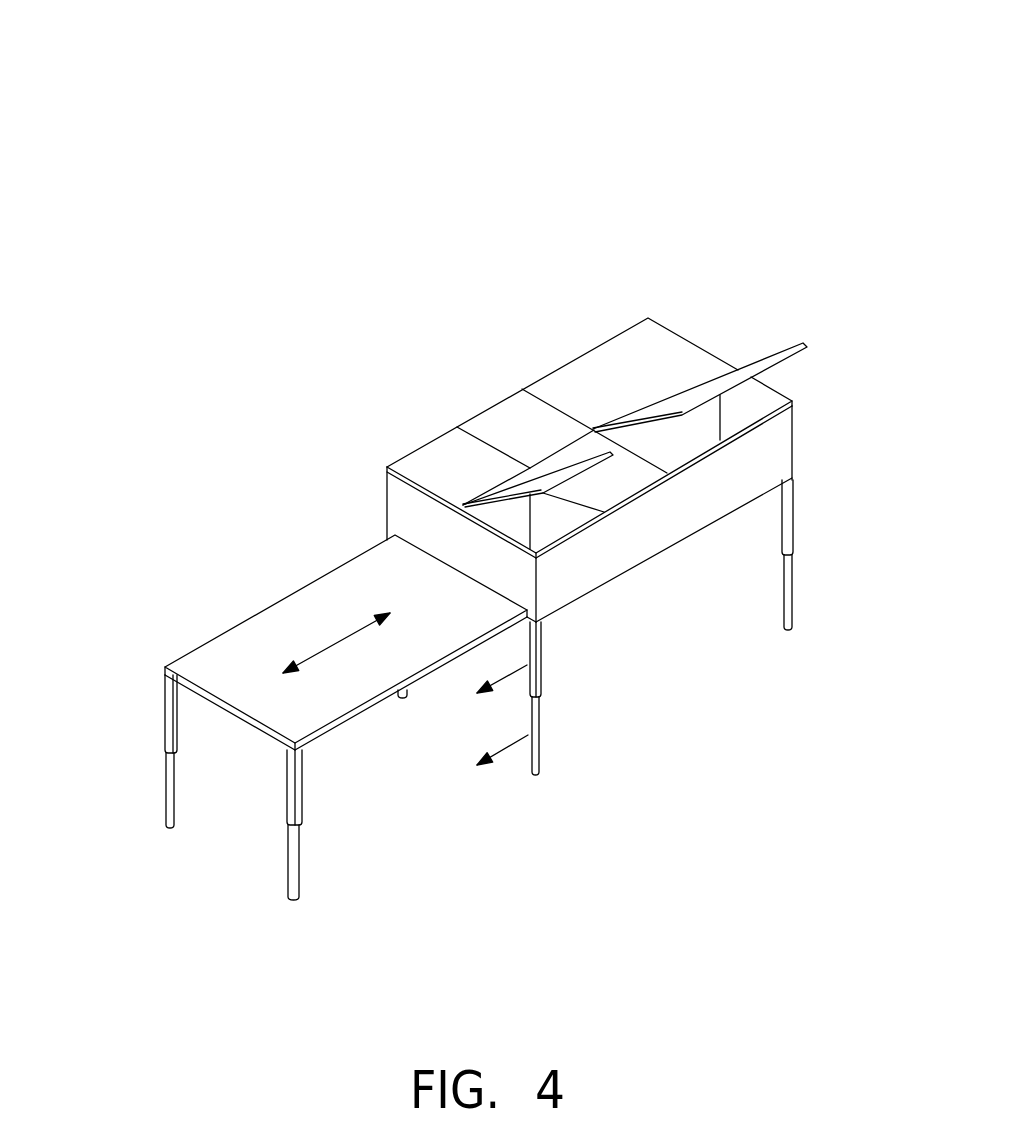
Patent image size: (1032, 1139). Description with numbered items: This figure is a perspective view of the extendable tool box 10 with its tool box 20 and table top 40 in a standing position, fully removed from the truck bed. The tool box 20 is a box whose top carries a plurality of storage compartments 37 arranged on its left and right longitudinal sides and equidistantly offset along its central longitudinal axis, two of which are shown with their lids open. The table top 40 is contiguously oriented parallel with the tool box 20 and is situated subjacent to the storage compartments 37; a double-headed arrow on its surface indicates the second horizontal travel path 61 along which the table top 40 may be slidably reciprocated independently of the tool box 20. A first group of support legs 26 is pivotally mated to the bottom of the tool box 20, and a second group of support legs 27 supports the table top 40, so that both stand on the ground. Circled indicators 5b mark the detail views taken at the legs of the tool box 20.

The extendable tool box 10 is at (432, 97).
The tool box 20 is at (795, 458).
The first group of support legs 26 is at (552, 660).
The second group of support legs 27 is at (290, 802).
The storage compartments 37 is at (638, 362).
The table top 40 is at (313, 618).
The second horizontal travel path 61 is at (332, 645).
The view indicator 5b is at (470, 739).